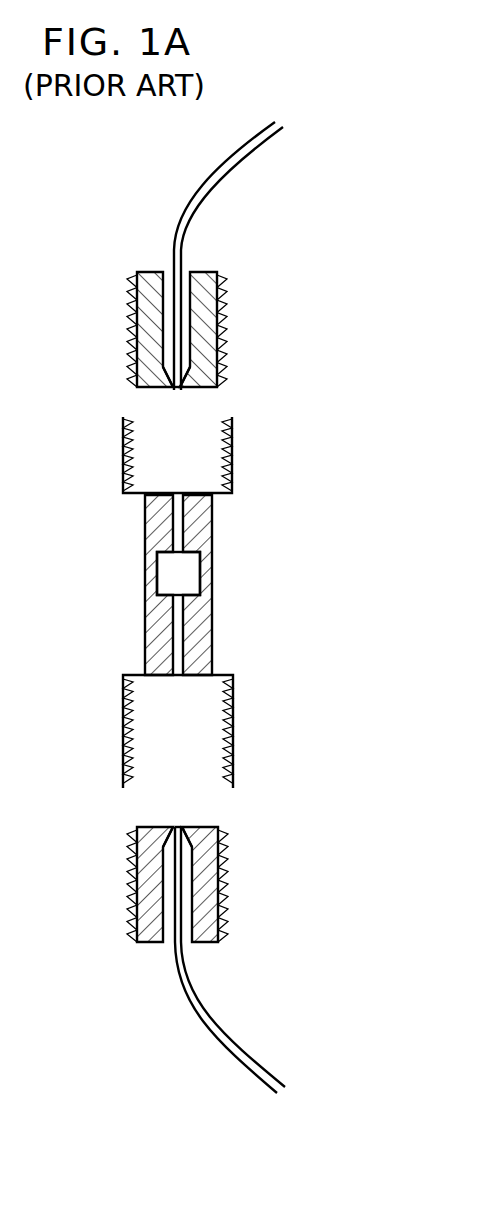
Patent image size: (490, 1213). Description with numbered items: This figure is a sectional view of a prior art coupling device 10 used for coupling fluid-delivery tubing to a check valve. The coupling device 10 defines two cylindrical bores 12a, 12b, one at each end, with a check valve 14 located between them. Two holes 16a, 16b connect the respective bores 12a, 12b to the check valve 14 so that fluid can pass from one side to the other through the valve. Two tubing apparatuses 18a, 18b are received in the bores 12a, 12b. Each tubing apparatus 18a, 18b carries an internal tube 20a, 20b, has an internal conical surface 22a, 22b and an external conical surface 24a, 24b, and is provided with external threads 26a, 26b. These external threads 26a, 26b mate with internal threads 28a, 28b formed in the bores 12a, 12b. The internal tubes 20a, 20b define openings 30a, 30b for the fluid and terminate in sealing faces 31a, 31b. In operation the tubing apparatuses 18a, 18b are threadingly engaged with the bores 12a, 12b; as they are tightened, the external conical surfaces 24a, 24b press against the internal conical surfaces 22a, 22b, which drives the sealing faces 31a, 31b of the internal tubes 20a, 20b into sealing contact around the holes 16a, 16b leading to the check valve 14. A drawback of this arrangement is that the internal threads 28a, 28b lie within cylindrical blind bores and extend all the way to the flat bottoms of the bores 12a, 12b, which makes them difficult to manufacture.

The coupling device 10 is at (352, 457).
The cylindrical bore 12a is at (233, 722).
The cylindrical bore 12b is at (218, 447).
The check valve 14 is at (183, 578).
The hole 16a is at (178, 677).
The hole 16b is at (170, 493).
The tubing apparatus 18a is at (200, 942).
The tubing apparatus 18b is at (197, 272).
The internal tube 20a is at (242, 1060).
The internal tube 20b is at (221, 173).
The internal conical surface 22a is at (133, 876).
The internal conical surface 22b is at (130, 345).
The external conical surface 24a is at (160, 832).
The external conical surface 24b is at (152, 388).
The external threads 26a is at (222, 865).
The external threads 26b is at (229, 318).
The internal threads 28a is at (123, 742).
The internal threads 28b is at (123, 465).
The opening 30a is at (178, 826).
The opening 30b is at (177, 389).
The sealing face 31a is at (172, 825).
The sealing face 31b is at (172, 388).